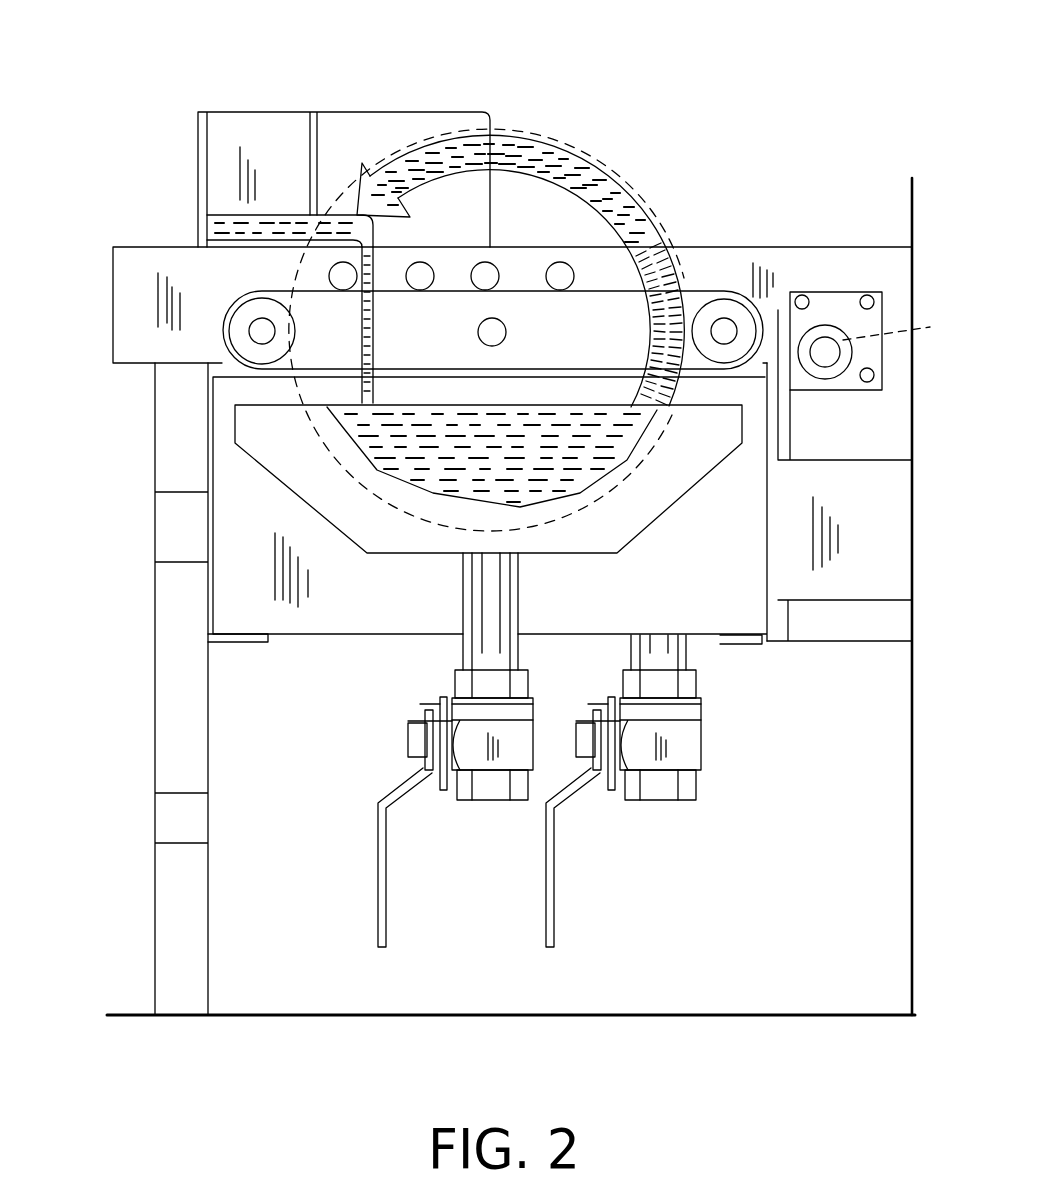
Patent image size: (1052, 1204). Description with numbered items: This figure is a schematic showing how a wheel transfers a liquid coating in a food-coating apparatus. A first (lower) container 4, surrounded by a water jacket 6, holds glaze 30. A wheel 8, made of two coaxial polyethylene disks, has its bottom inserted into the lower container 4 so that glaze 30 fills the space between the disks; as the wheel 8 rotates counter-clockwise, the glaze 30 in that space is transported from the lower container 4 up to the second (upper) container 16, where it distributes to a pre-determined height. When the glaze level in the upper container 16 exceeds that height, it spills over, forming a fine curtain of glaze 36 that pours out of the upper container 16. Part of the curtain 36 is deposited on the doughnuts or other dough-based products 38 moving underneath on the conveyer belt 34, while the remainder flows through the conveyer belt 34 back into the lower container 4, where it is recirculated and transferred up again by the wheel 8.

The second (upper) container 16 is at (338, 133).
The glaze 30 is at (530, 147).
The wheel 8 is at (587, 160).
The doughnuts (or other dough-based products) 38 is at (574, 276).
The conveyer belt 34 is at (692, 296).
The curtain of glaze 36 is at (368, 345).
The first (lower) container 4 is at (420, 530).
The water jacket 6 is at (700, 582).